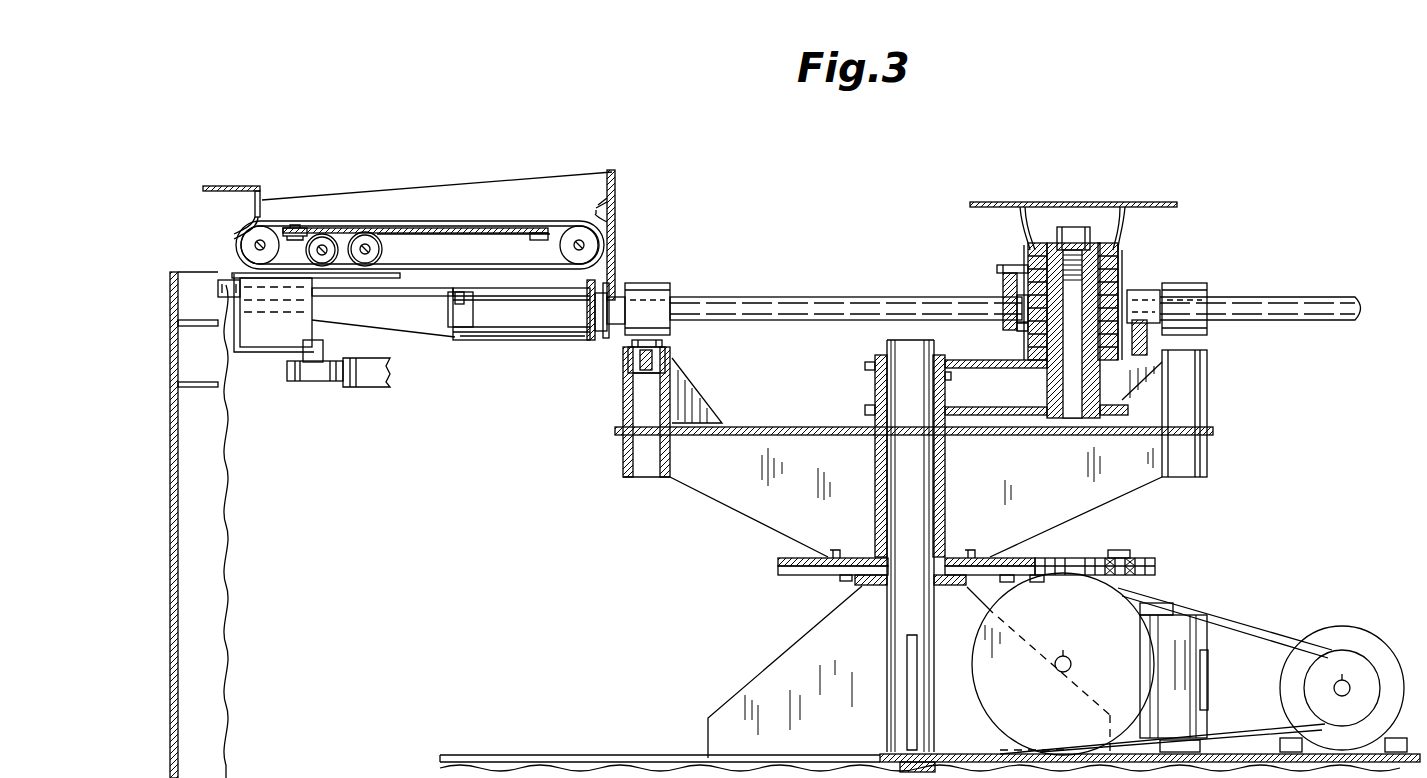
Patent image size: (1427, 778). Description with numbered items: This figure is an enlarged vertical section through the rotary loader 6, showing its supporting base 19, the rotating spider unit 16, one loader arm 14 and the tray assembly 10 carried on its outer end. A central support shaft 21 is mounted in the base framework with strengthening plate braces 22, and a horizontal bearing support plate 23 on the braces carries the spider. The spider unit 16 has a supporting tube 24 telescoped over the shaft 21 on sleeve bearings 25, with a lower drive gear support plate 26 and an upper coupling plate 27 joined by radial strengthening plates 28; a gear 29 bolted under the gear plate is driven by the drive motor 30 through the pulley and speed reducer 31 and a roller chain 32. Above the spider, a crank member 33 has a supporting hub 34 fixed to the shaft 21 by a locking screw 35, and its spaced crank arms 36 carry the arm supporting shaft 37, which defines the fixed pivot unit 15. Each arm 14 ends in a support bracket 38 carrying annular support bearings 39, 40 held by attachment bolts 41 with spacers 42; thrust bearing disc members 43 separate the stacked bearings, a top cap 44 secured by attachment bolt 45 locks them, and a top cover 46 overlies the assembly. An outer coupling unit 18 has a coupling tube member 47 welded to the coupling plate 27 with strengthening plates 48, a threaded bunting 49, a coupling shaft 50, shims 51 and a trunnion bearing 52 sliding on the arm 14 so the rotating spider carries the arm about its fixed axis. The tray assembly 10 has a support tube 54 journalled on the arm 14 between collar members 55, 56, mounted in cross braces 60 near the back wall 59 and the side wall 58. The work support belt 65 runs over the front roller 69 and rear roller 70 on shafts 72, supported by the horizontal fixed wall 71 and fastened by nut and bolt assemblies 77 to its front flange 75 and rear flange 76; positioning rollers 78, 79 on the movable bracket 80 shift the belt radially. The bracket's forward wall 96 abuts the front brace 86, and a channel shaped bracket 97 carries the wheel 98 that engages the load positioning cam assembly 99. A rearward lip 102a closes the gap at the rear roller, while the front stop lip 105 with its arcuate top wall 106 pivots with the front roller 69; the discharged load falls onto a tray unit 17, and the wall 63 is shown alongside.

The rotary loader 6 is at (1105, 272).
The tray assembly 10 is at (476, 212).
The loader arm 14 is at (891, 298).
The fixed pivot unit 15 is at (1075, 274).
The spider unit 16 is at (946, 441).
The tray unit 17 is at (971, 537).
The outer coupling unit 18 is at (925, 367).
The supporting base 19 is at (625, 752).
The support shaft 21 is at (905, 615).
The strengthening plate brace 22 is at (760, 673).
The bearing support plate 23 is at (855, 585).
The supporting tube 24 is at (945, 486).
The sleeve bearing 25 is at (935, 443).
The drive gear support plate 26 is at (968, 547).
The coupling plate 27 is at (1060, 435).
The strengthening plate 28 is at (801, 480).
The gear 29 is at (1038, 565).
The drive motor 30 is at (1355, 627).
The pulley and speed reducer 31 is at (1126, 660).
The roller chain 32 is at (1160, 568).
The crank member 33 is at (975, 440).
The supporting hub 34 is at (875, 390).
The locking screw 35 is at (960, 368).
The crank arm 36 is at (1028, 392).
The arm supporting shaft 37 is at (1085, 400).
The support bracket 38 is at (1003, 286).
The annular support bearing 39 is at (1120, 267).
The annular support bearing 40 is at (1022, 312).
The attachment bolt 41 is at (998, 268).
The spacer 42 is at (1028, 262).
The thrust bearing disc member 43 is at (1122, 280).
The top cap 44 is at (1122, 250).
The attachment bolt 45 is at (1075, 227).
The top cover 46 is at (1003, 205).
The coupling tube member 47 is at (623, 393).
The strengthening plate 48 is at (690, 405).
The threaded bunting 49 is at (665, 357).
The coupling shaft 50 is at (640, 358).
The shim 51 is at (665, 345).
The trunnion bearing 52 is at (648, 310).
The support tube 54 is at (517, 335).
The collar member 55 is at (458, 300).
The collar member 56 is at (612, 292).
The side wall 58 is at (545, 178).
The back wall 59 is at (615, 190).
The cross brace 60 is at (585, 303).
The wall 63 is at (207, 388).
The work support belt 65 is at (530, 228).
The front roller 69 is at (265, 238).
The rear roller 70 is at (575, 240).
The horizontal fixed wall 71 is at (430, 240).
The shaft 72 is at (252, 244).
The front flange 75 is at (320, 242).
The rear flange 76 is at (540, 240).
The nut and bolt assembly 77 is at (315, 230).
The positioning roller 78 is at (330, 263).
The positioning roller 79 is at (372, 244).
The bracket 80 is at (330, 265).
The front brace 86 is at (218, 290).
The forward wall 96 is at (272, 295).
The channel shaped bracket 97 is at (270, 350).
The wheel 98 is at (315, 380).
The load positioning cam assembly 99 is at (362, 380).
The rearward lip 102a is at (597, 205).
The front stop lip 105 is at (235, 203).
The arcuate top wall 106 is at (255, 187).